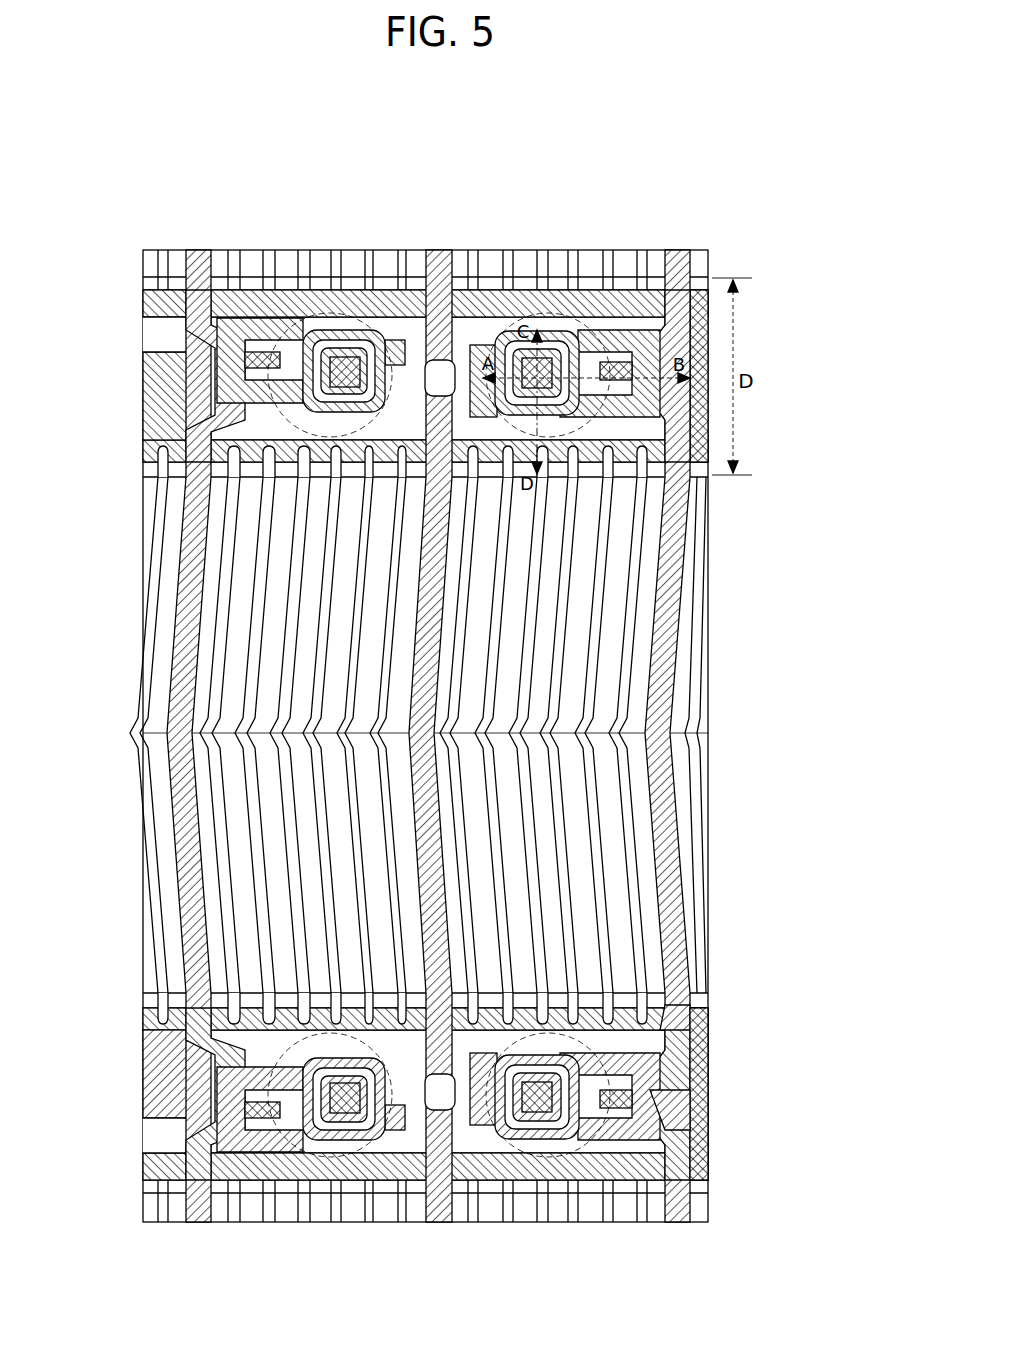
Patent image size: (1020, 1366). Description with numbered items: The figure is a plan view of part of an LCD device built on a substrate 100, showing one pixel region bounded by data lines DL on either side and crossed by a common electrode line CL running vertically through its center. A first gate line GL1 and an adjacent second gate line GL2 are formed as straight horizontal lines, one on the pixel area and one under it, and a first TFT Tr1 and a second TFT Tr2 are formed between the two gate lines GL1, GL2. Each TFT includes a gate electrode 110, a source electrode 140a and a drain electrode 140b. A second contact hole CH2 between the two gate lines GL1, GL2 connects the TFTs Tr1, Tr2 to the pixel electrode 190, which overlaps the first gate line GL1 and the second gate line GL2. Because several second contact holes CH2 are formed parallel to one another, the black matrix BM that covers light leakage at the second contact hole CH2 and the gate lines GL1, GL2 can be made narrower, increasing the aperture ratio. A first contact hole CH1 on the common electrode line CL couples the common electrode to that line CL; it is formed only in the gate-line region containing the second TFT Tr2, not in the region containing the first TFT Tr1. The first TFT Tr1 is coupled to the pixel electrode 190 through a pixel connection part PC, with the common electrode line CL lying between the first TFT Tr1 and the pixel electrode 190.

The substrate 100 is at (733, 238).
The data line DL is at (197, 250).
The common electrode line CL is at (432, 250).
The first gate line GL1 is at (150, 303).
The second gate line GL2 is at (150, 454).
The black matrix BM is at (160, 352).
The first TFT Tr1 is at (300, 1165).
The second TFT Tr2 is at (300, 312).
The first contact hole CH1 is at (458, 355).
The second contact hole CH2 is at (332, 330).
The pixel connection part PC is at (420, 1115).
The pixel electrode 190 is at (636, 578).
The gate electrode 110 is at (690, 1064).
The source electrode 140a is at (690, 1022).
The drain electrode 140b is at (690, 1110).